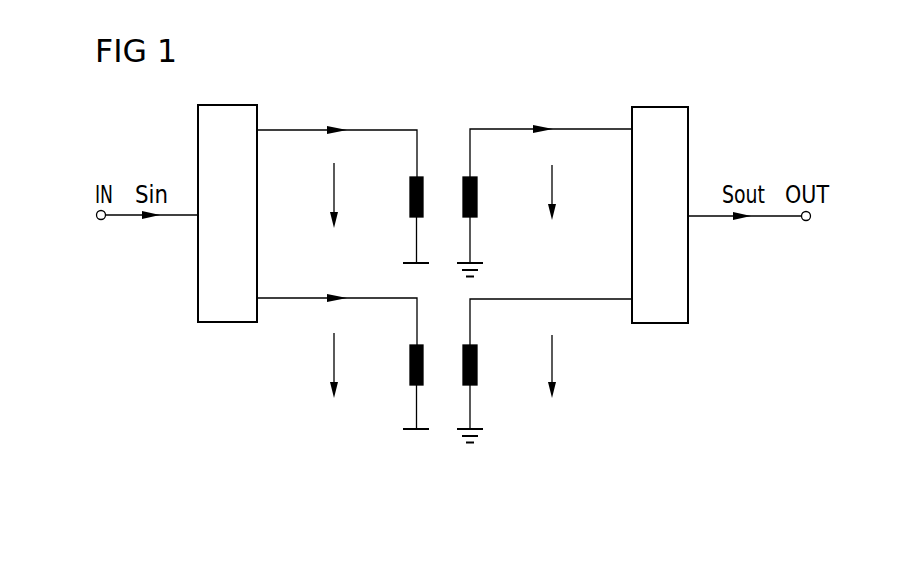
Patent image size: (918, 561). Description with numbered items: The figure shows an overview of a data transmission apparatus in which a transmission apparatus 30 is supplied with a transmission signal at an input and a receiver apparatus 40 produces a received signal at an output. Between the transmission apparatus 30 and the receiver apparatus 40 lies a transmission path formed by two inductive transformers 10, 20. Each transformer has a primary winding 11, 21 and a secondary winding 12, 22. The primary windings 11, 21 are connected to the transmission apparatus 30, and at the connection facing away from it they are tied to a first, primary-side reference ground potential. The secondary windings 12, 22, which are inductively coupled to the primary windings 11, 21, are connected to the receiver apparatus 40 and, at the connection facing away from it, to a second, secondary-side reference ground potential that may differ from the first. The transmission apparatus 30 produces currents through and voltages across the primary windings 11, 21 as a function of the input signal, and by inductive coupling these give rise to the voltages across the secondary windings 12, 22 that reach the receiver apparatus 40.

The inductive transformer 10 is at (444, 165).
The primary winding 11 is at (410, 196).
The secondary winding 12 is at (478, 196).
The inductive transformer 20 is at (444, 377).
The primary winding 21 is at (410, 364).
The secondary winding 22 is at (478, 364).
The transmission apparatus 30 is at (226, 322).
The receiver apparatus 40 is at (665, 323).